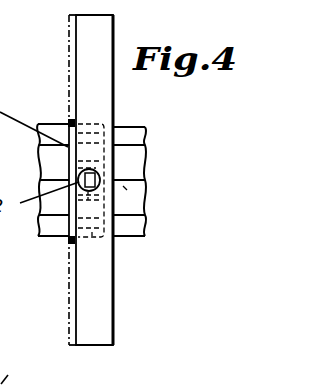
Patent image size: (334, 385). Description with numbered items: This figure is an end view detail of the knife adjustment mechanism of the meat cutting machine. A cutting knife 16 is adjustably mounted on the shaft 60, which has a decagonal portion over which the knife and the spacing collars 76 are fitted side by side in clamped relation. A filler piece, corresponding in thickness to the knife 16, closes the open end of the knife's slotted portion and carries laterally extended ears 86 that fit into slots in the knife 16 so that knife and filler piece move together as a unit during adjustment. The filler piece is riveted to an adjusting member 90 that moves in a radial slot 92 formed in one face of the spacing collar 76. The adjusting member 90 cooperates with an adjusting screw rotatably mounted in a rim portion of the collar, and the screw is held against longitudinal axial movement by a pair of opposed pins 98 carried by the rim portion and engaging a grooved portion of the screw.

The cutting knife 16 is at (67, 26).
The spacing collar 76 is at (108, 31).
The shaft 60 is at (137, 169).
The adjusting member 90 is at (95, 121).
The opposed pins 98 is at (115, 162).
The radial slot 92 is at (92, 238).
The laterally extended ears 86 is at (68, 121).